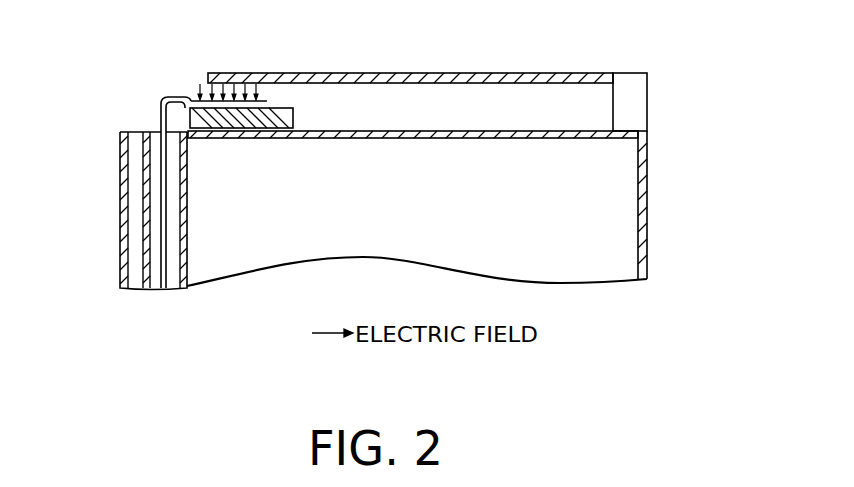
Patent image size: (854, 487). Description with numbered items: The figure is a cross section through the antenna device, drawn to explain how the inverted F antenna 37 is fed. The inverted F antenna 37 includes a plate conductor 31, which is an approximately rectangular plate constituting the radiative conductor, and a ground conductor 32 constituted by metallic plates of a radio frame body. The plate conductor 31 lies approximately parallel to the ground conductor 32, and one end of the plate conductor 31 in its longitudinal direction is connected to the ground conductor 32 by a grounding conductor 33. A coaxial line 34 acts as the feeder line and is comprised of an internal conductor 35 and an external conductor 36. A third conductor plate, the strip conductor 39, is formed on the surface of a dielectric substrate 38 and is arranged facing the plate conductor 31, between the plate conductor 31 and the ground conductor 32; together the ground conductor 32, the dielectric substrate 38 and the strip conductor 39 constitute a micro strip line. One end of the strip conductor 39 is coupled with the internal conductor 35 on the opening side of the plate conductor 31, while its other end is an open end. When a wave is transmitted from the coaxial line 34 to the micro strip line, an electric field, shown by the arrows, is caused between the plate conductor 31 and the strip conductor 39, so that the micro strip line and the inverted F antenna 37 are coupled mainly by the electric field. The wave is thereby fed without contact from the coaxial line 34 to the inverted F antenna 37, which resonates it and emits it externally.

The plate conductor 31 is at (472, 73).
The ground conductor 32 is at (648, 200).
The grounding conductor 33 is at (630, 100).
The coaxial line 34 is at (153, 290).
The internal conductor 35 is at (160, 108).
The external conductor 36 is at (142, 222).
The inverted F antenna 37 is at (600, 33).
The dielectric substrate 38 is at (284, 111).
The strip conductor 39 is at (193, 97).